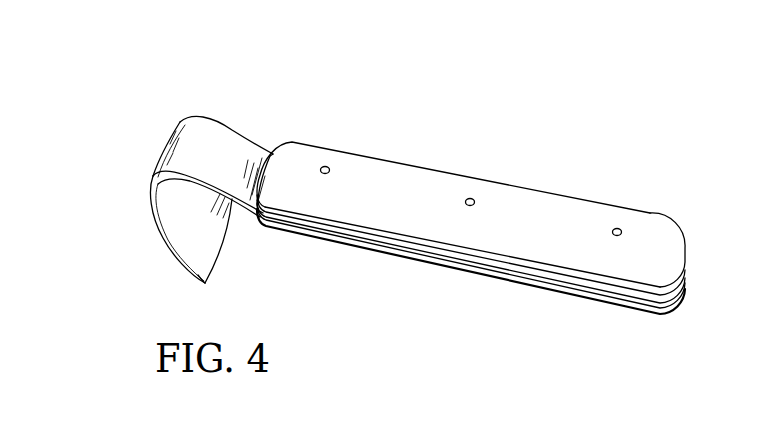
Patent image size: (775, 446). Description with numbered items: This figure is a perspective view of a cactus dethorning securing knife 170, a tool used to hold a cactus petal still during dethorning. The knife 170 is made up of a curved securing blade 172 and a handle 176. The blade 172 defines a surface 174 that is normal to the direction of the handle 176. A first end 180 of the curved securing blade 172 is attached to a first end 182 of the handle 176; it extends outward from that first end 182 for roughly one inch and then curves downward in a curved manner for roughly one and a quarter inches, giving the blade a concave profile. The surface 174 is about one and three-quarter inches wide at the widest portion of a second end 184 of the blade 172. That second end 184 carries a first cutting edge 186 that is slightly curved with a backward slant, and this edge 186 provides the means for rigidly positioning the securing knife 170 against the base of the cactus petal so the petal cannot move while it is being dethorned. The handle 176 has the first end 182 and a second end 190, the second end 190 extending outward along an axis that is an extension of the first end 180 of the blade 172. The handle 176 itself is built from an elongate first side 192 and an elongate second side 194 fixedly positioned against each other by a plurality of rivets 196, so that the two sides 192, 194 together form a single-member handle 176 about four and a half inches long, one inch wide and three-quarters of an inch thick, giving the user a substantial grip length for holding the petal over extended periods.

The cactus dethorning securing knife 170 is at (533, 88).
The curved securing blade 172 is at (205, 178).
The surface 174 is at (158, 226).
The handle 176 is at (511, 236).
The first end of the curved securing blade 180 is at (243, 152).
The first end of the securing knife handle 182 is at (273, 155).
The second end of the securing blade 184 is at (183, 266).
The first cutting edge 186 is at (222, 252).
The second end of the handle 190 is at (672, 246).
The elongate first side 192 is at (550, 266).
The elongate second side 194 is at (407, 255).
The rivets 196 is at (330, 167).